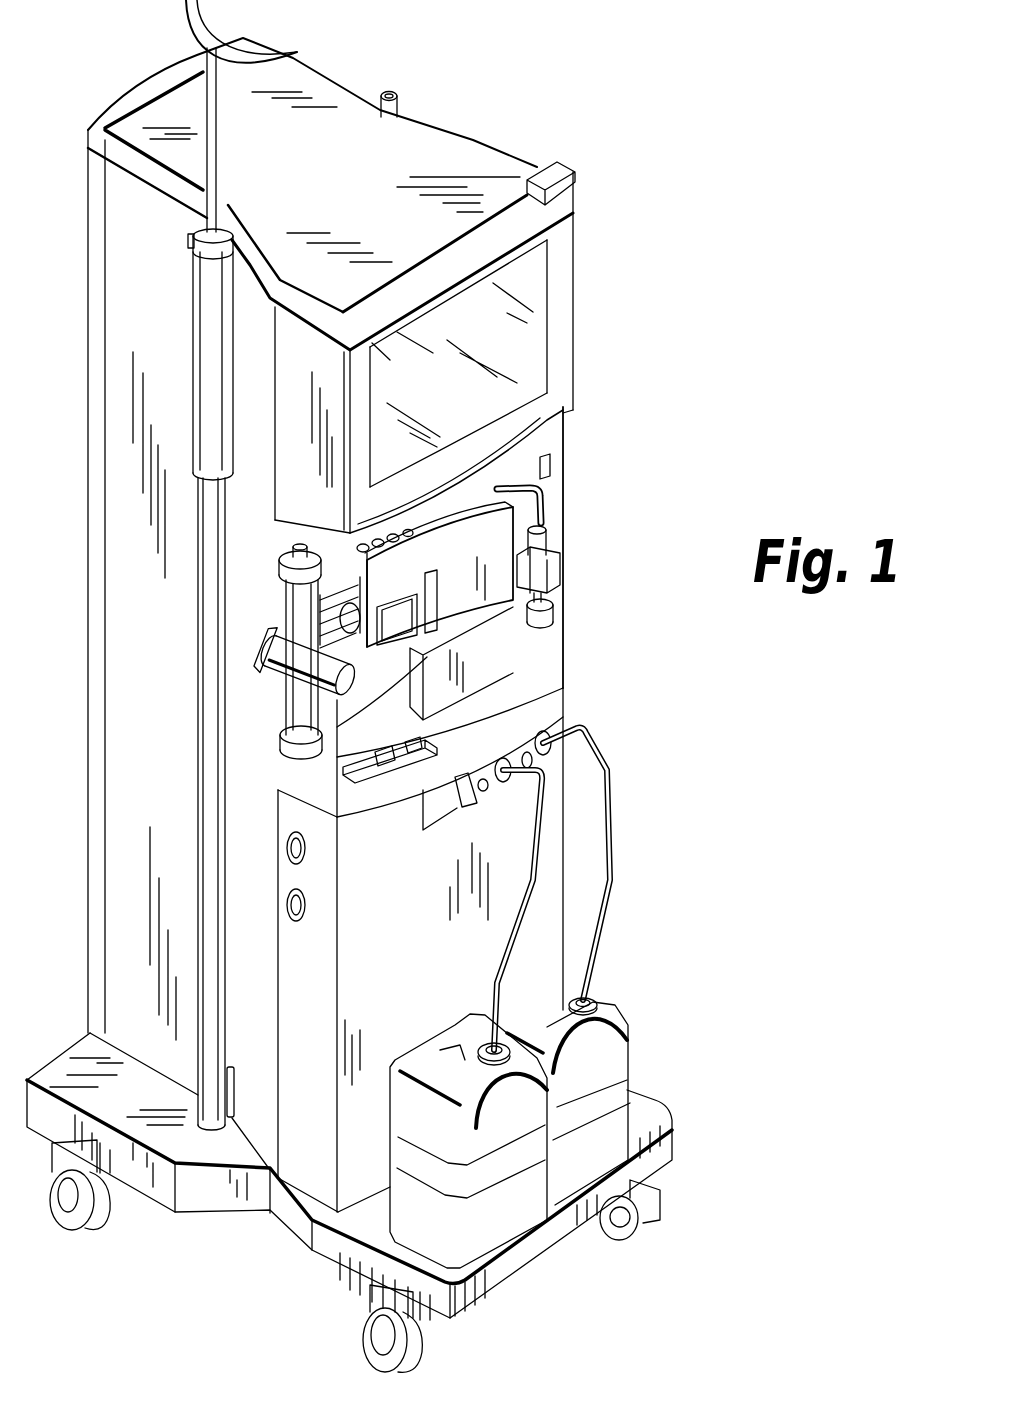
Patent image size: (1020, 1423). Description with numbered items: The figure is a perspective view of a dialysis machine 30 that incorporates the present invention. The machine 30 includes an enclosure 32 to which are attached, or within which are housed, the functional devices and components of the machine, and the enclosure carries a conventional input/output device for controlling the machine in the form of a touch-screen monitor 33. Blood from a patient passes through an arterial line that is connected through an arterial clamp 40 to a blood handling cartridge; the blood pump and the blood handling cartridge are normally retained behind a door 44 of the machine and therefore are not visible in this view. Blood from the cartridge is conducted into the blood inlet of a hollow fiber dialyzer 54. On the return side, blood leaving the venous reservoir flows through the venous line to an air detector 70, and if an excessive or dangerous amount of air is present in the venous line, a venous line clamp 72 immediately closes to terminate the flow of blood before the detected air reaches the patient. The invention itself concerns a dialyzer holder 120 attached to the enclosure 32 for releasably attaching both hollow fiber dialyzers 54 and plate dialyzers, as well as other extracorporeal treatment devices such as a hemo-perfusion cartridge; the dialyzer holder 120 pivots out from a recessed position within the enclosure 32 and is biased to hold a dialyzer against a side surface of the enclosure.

The dialysis machine 30 is at (695, 275).
The enclosure 32 is at (480, 133).
The touch-screen monitor 33 is at (517, 360).
The arterial clamp 40 is at (563, 688).
The door 44 is at (497, 553).
The hollow fiber dialyzer 54 is at (295, 613).
The air detector 70 is at (337, 727).
The venous line clamp 72 is at (372, 782).
The dialyzer holder 120 is at (284, 682).